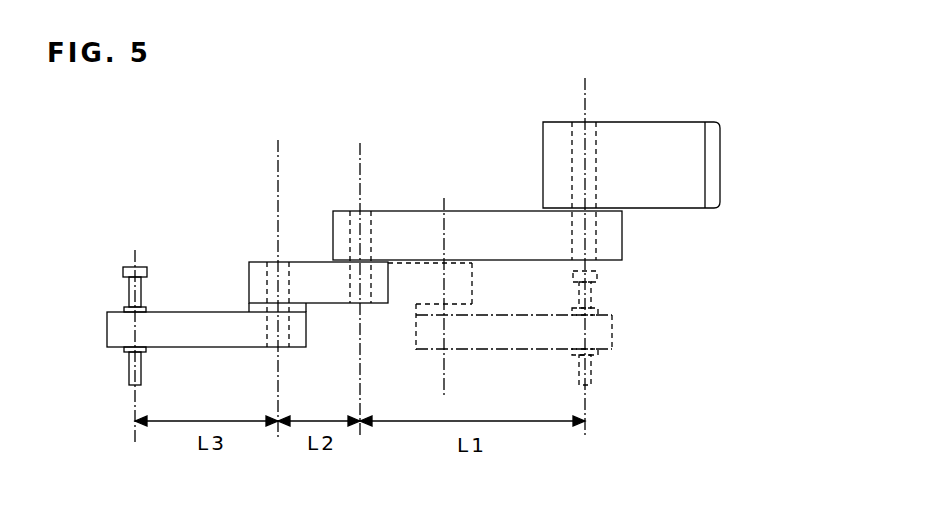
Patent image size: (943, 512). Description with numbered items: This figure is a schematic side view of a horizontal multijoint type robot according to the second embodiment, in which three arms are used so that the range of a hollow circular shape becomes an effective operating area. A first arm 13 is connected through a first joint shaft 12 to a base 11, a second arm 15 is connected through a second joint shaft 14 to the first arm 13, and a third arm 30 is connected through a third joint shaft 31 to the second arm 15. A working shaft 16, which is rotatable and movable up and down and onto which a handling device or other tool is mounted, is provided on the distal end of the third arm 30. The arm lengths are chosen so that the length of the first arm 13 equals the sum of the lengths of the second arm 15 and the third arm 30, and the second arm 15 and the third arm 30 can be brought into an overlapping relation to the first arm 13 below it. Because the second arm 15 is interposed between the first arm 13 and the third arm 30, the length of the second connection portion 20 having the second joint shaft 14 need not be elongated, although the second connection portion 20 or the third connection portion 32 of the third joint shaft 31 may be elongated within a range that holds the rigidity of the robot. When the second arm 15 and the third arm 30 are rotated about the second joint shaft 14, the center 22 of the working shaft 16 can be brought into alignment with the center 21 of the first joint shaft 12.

The base 11 is at (720, 130).
The first joint shaft 12 is at (598, 128).
The first arm 13 is at (482, 218).
The second joint shaft 14 is at (374, 216).
The second arm 15 is at (316, 270).
The working shaft 16 is at (130, 366).
The second connection portion 20 is at (390, 262).
The center of the first joint shaft 21 is at (585, 403).
The center of the working shaft 22 is at (135, 405).
The third arm 30 is at (194, 322).
The third joint shaft 31 is at (258, 262).
The third connection portion 32 is at (300, 313).